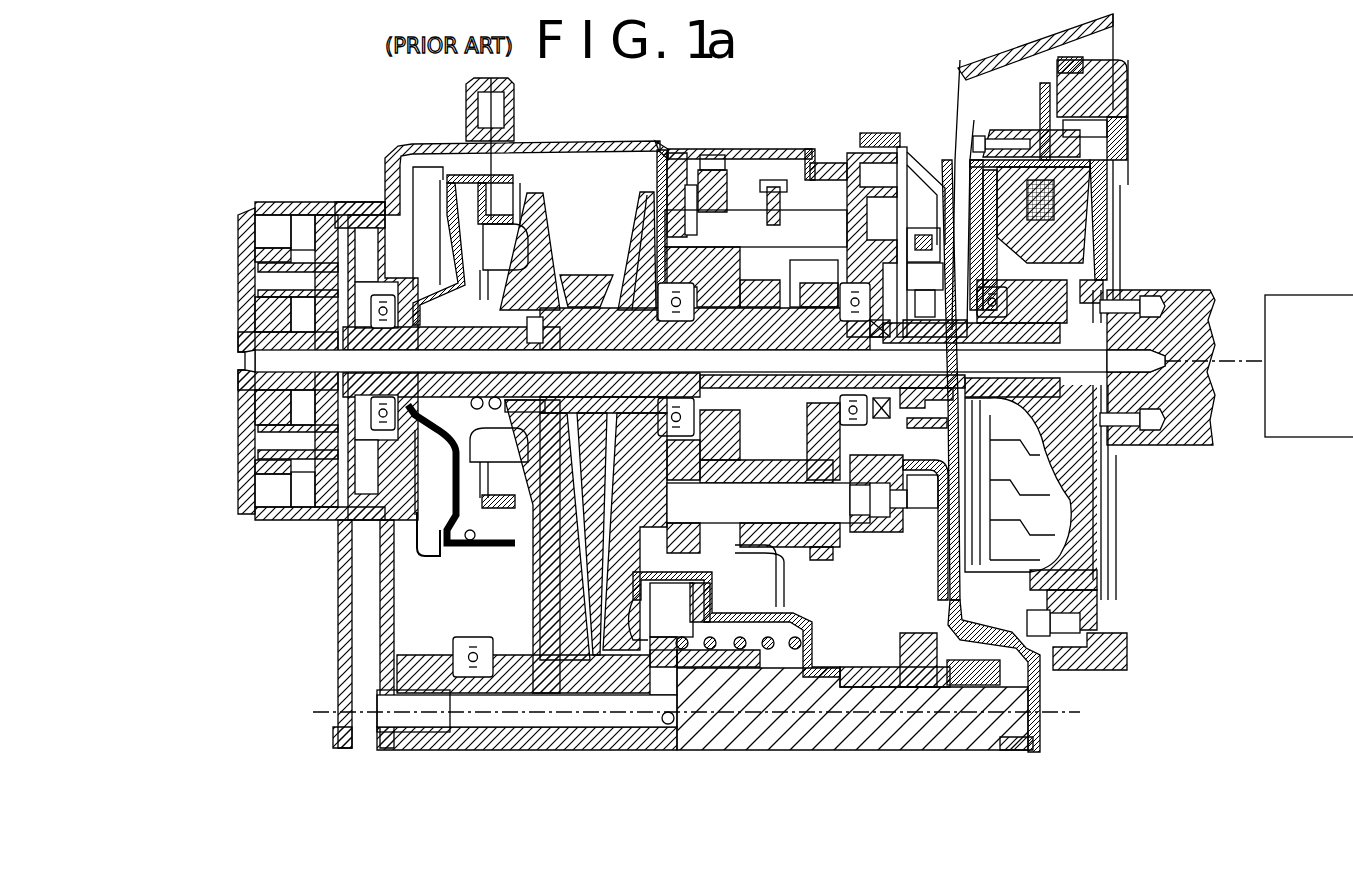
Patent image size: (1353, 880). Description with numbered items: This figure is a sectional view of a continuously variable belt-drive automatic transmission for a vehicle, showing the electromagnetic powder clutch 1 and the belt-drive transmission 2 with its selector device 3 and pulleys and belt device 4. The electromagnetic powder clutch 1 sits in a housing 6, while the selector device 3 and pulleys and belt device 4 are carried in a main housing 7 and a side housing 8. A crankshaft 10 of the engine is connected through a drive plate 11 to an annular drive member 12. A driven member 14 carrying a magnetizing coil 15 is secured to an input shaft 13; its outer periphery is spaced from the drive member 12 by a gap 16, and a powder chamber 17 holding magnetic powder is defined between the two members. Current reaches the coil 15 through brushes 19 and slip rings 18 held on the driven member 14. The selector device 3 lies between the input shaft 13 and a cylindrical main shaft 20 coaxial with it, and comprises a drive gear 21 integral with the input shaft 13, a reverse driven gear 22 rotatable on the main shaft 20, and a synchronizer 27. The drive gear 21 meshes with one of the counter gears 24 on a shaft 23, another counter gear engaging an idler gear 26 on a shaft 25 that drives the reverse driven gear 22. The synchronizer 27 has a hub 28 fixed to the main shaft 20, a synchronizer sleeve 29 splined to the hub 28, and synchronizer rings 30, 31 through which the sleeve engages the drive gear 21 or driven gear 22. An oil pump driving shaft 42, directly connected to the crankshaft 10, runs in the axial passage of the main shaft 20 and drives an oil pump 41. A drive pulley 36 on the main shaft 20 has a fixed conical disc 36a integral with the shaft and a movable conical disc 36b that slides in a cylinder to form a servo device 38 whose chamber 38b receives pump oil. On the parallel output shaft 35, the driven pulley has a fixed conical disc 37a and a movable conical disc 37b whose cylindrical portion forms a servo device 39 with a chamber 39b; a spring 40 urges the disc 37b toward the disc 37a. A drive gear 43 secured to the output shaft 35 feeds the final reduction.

The electromagnetic powder clutch 1 is at (1136, 103).
The continuously variable belt-drive transmission 2 is at (784, 98).
The selector device 3 is at (790, 142).
The pulleys and belt device 4 is at (573, 174).
The housing 6 is at (975, 60).
The main housing 7 is at (632, 146).
The side housing 8 is at (400, 152).
The crankshaft 10 is at (1200, 450).
The drive plate 11 is at (1110, 262).
The annular drive member 12 is at (1120, 70).
The input shaft 13 is at (899, 473).
The driven member 14 is at (1090, 200).
The magnetizing coil 15 is at (1055, 215).
The gap 16 is at (1105, 153).
The powder chamber 17 is at (1108, 290).
The slip rings 18 is at (930, 423).
The brushes 19 is at (913, 235).
The main shaft 20 is at (815, 381).
The drive gear 21 is at (872, 220).
The reverse driven gear 22 is at (678, 393).
The shaft 23 is at (862, 535).
The counter gears 24 is at (808, 558).
The shaft 25 is at (775, 222).
The idler gear 26 is at (712, 175).
The synchronizer 27 is at (790, 478).
The hub 28 is at (700, 330).
The synchronizer sleeve 29 is at (790, 292).
The synchronizer ring 30 is at (756, 229).
The synchronizer ring 31 is at (740, 275).
The output shaft 35 is at (875, 690).
The drive pulley 36 is at (637, 188).
The fixed conical disc 36a is at (650, 228).
The movable conical disc 36b is at (548, 268).
The fixed conical disc 37a is at (555, 602).
The movable conical disc 37b is at (603, 528).
The servo device 38 is at (505, 182).
The chamber 38b is at (495, 545).
The servo device 39 is at (735, 605).
The chamber 39b is at (690, 605).
The spring 40 is at (800, 630).
The oil pump 41 is at (303, 232).
The oil pump driving shaft 42 is at (248, 358).
The drive gear 43 is at (925, 636).